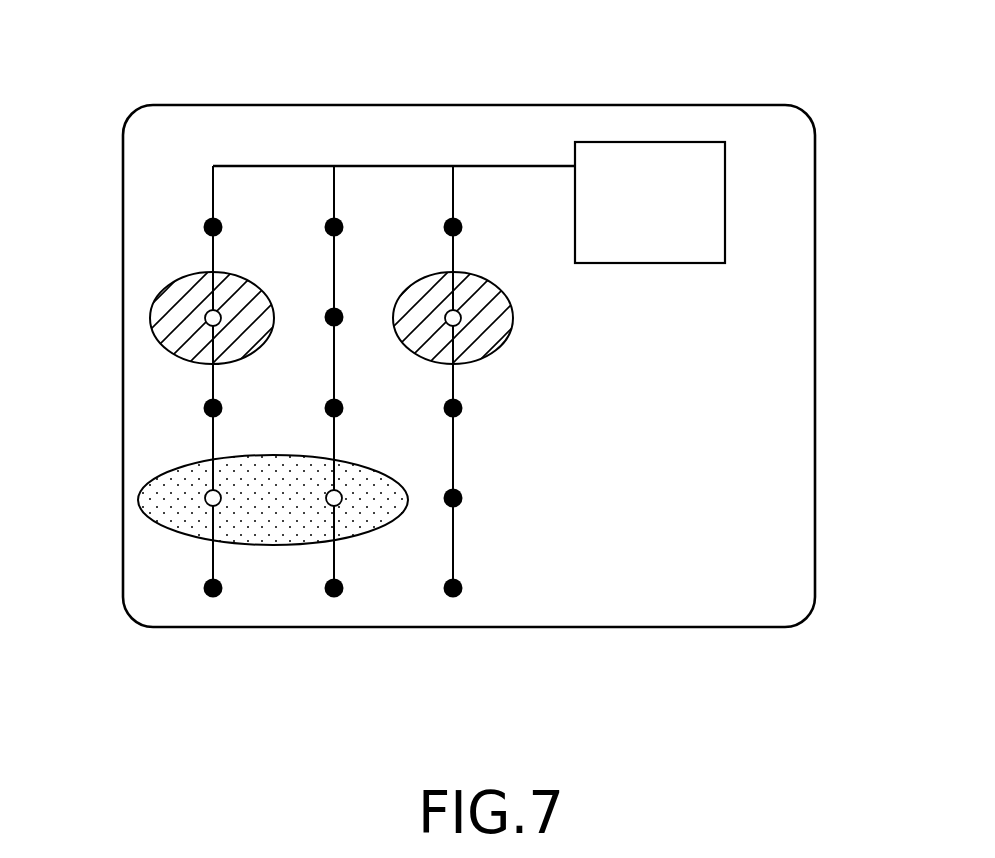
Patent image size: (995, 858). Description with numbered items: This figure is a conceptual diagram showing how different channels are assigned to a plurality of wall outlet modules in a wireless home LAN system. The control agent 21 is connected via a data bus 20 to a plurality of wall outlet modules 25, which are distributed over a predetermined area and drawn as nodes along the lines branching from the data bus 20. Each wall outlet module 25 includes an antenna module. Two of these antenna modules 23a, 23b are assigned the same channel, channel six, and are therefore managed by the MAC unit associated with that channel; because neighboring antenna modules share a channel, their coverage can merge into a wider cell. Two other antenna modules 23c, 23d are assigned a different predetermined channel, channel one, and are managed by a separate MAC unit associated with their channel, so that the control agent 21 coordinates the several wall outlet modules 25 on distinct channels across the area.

The data bus 20 is at (529, 166).
The control agent 21 is at (653, 142).
The antenna module 23a is at (205, 320).
The antenna module 23b is at (461, 318).
The antenna module 23c is at (206, 504).
The antenna module 23d is at (328, 503).
The wall outlet module 25 is at (460, 594).